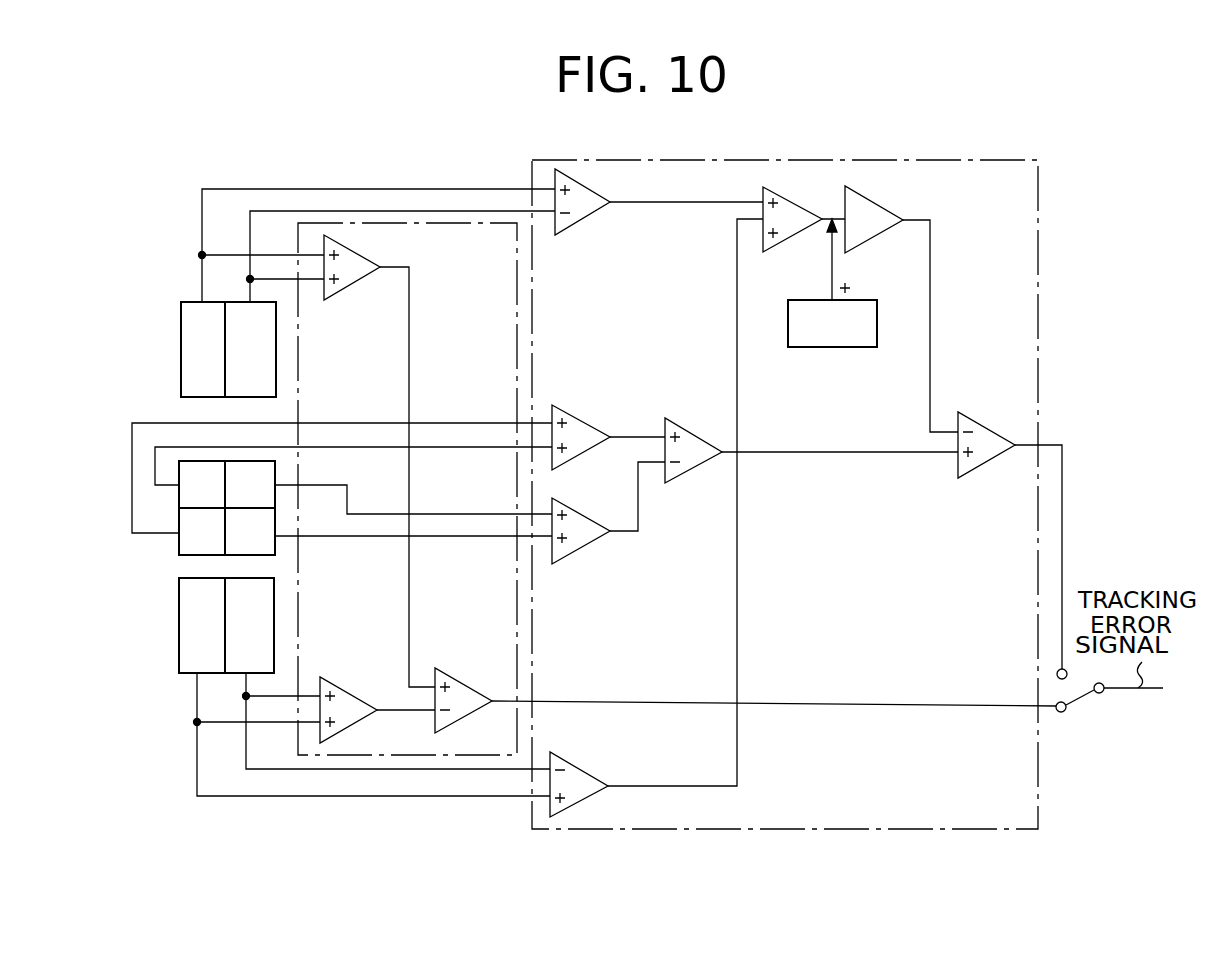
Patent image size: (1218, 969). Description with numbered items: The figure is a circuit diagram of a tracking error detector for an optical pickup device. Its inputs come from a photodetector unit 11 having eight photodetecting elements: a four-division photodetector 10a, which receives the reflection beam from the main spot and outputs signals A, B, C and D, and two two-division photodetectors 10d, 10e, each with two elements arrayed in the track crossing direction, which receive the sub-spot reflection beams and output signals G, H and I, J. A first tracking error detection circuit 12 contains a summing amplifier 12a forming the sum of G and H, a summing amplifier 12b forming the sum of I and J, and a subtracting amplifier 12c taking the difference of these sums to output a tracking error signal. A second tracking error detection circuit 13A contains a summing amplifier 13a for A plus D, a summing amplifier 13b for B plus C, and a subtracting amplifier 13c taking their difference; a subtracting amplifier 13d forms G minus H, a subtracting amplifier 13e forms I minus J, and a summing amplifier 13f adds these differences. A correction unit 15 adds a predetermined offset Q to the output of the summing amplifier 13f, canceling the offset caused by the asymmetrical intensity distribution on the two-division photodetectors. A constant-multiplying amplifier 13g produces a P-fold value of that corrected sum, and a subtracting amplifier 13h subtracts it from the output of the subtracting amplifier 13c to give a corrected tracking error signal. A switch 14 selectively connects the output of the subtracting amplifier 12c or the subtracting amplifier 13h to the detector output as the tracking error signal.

The four-division photodetector 10a is at (179, 547).
The two-division photodetector 10d is at (181, 334).
The two-division photodetector 10e is at (179, 622).
The photodetector unit 11 is at (162, 660).
The first tracking error detection circuit 12 is at (410, 757).
The summing amplifier 12a is at (348, 289).
The summing amplifier 12b is at (348, 683).
The subtracting amplifier 12c is at (456, 672).
The second tracking error detection circuit 13A is at (1038, 797).
The summing amplifier 13a is at (574, 405).
The summing amplifier 13b is at (582, 553).
The subtracting amplifier 13c is at (686, 418).
The subtracting amplifier 13d is at (582, 222).
The subtracting amplifier 13e is at (592, 765).
The summing amplifier 13f is at (777, 248).
The constant-multiplying amplifier 13g is at (870, 198).
The subtracting amplifier 13h is at (986, 415).
The switch 14 is at (1084, 694).
The correction unit 15 is at (833, 347).